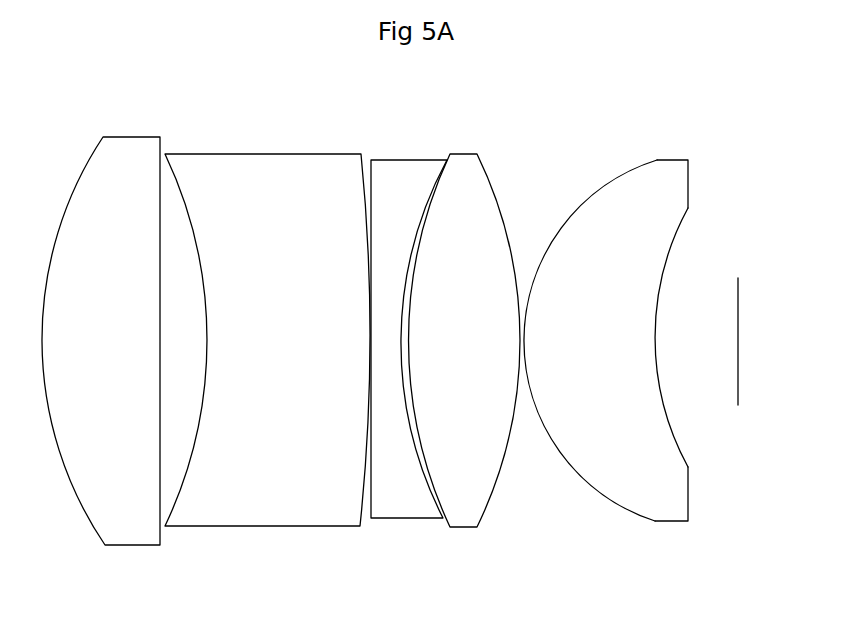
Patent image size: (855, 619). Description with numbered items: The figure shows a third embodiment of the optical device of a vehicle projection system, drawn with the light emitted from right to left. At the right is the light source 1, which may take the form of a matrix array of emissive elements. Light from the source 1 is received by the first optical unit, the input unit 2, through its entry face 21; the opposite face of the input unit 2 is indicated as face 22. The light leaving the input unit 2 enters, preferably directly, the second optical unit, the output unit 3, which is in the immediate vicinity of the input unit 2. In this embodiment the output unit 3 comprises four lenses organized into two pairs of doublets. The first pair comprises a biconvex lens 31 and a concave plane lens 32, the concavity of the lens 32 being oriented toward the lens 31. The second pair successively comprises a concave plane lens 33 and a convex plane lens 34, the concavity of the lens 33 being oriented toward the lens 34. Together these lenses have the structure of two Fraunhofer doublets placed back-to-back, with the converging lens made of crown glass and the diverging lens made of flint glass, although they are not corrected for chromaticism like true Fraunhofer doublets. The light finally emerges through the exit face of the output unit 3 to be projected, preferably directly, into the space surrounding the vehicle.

The light source 1 is at (740, 312).
The input unit 2 is at (634, 351).
The entry face 21 is at (680, 455).
The object-side surface of second lens 22 is at (600, 492).
The output unit 3 is at (102, 124).
The biconvex lens 31 is at (460, 502).
The concave plane lens 32 is at (384, 503).
The concave plane lens 33 is at (263, 502).
The convex plane lens 34 is at (135, 522).